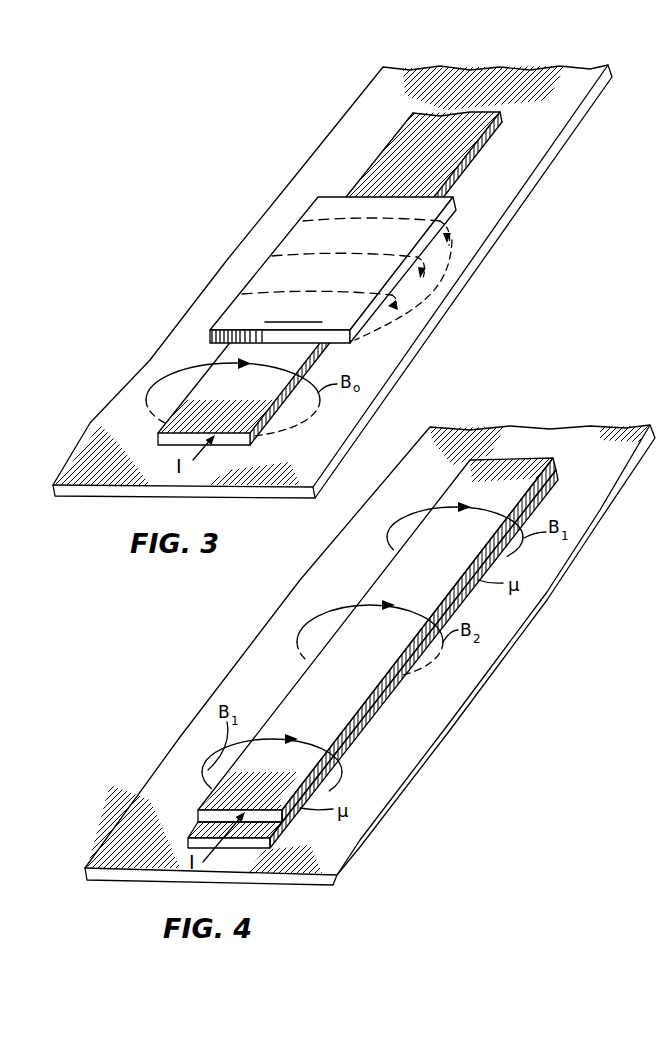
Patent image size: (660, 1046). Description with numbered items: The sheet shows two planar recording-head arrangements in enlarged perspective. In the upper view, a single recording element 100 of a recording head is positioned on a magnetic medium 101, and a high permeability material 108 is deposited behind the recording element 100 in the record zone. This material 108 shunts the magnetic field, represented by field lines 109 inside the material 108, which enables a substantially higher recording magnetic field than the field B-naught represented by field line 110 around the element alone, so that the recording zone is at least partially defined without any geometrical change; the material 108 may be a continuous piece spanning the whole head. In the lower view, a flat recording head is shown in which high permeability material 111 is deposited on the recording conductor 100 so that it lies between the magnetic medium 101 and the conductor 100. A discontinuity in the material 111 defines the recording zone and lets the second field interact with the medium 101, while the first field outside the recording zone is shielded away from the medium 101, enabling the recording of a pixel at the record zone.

In FIG. 3, the recording element 100 is at (397, 160).
In FIG. 4, the recording element 100 is at (493, 467).
In FIG. 3, the magnetic medium 101 is at (367, 100).
In FIG. 4, the magnetic medium 101 is at (578, 440).
In FIG. 3, the high permeability material 108 is at (335, 203).
In FIG. 3, the field lines 109 is at (398, 308).
In FIG. 3, the field line 110 is at (165, 383).
In FIG. 4, the high permeability material 111 is at (554, 472).